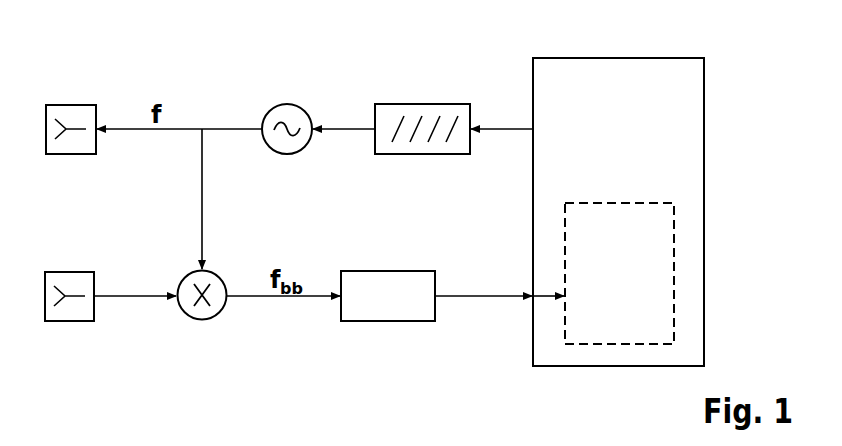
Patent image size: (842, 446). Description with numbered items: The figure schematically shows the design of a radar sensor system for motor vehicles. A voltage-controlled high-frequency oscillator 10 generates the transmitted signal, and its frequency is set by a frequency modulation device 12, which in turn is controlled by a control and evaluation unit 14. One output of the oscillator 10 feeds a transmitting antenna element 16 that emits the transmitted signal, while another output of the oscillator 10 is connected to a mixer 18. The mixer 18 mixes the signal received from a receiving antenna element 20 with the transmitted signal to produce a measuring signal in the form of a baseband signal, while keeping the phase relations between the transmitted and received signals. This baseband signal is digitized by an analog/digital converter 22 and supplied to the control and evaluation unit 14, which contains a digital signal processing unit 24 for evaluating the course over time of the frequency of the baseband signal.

The voltage-controlled high-frequency oscillator 10 is at (287, 103).
The frequency modulation device 12 is at (422, 103).
The control and evaluation unit 14 is at (705, 205).
The transmitting antenna element 16 is at (70, 104).
The mixer 18 is at (202, 320).
The receiving antenna element 20 is at (70, 322).
The analog/digital converter 22 is at (388, 322).
The digital signal processing unit 24 is at (675, 266).